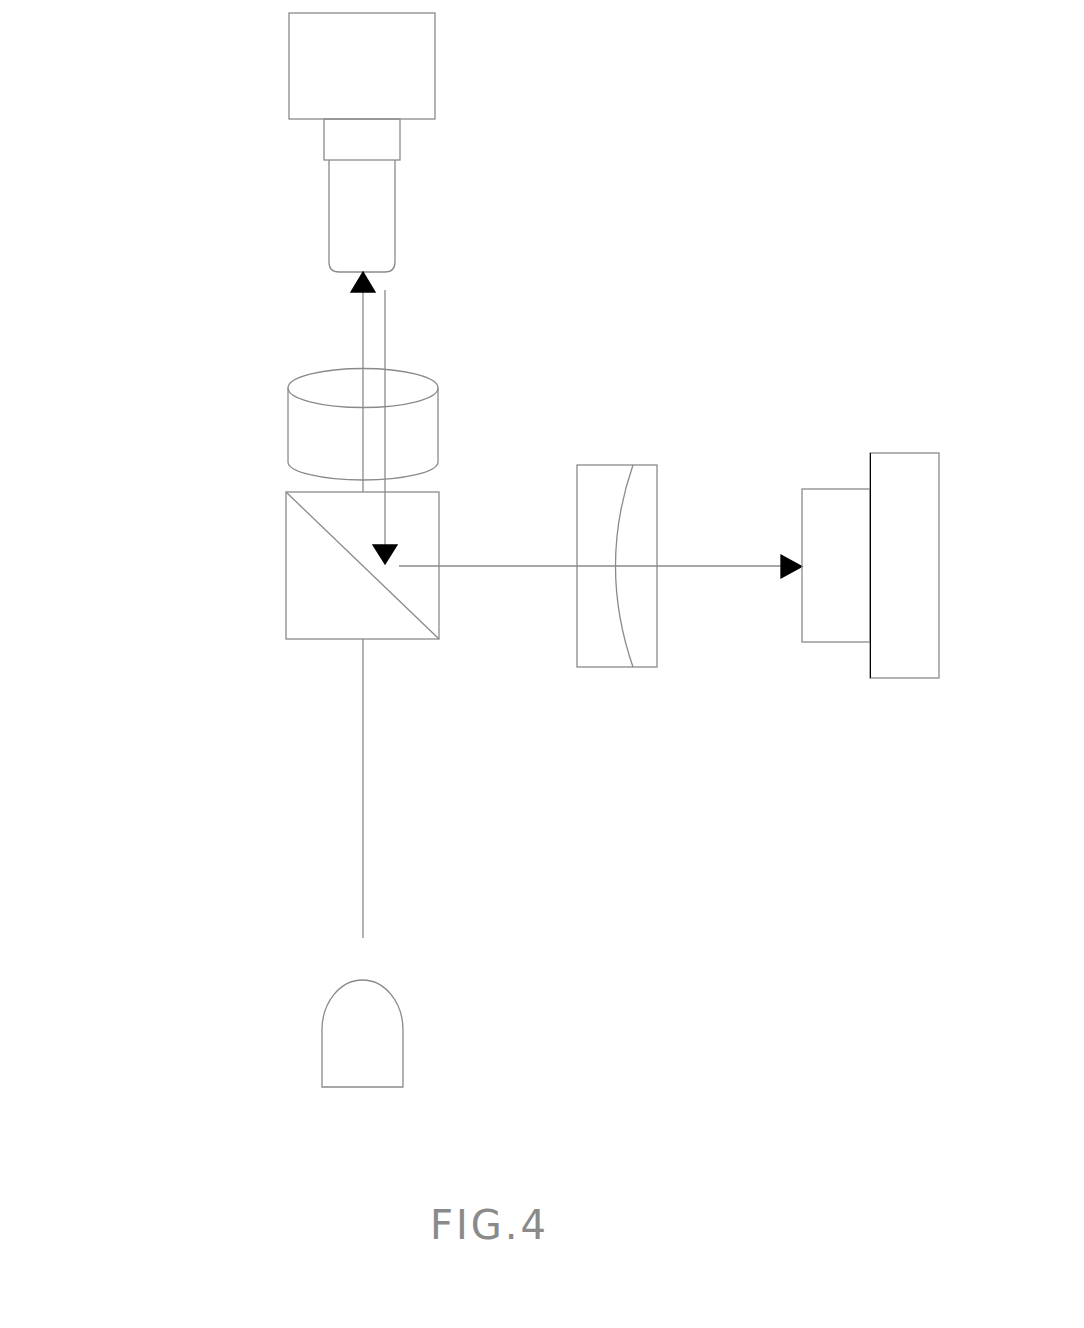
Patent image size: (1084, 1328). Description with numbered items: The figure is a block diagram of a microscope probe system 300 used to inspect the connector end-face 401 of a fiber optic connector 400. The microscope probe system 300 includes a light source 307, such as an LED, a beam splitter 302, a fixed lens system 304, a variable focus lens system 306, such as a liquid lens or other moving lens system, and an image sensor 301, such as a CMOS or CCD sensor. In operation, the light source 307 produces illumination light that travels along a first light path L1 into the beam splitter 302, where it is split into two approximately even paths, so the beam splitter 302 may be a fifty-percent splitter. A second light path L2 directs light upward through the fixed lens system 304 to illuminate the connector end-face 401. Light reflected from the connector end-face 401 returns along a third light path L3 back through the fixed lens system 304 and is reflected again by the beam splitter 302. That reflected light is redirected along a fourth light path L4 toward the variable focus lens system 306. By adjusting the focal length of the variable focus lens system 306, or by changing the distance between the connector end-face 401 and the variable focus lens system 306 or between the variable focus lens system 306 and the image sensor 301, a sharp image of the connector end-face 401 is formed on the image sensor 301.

The connector 400 is at (203, 83).
The connector end-face 401 is at (345, 183).
The microscope probe system 300 is at (790, 248).
The image sensor 301 is at (839, 513).
The beam splitter 302 is at (305, 585).
The fixed lens system 304 is at (305, 430).
The variable focus lens system 306 is at (640, 636).
The light source 307 is at (377, 1020).
The first light path L1 is at (362, 805).
The second light path L2 is at (362, 340).
The third light path L3 is at (385, 322).
The fourth light path L4 is at (533, 566).